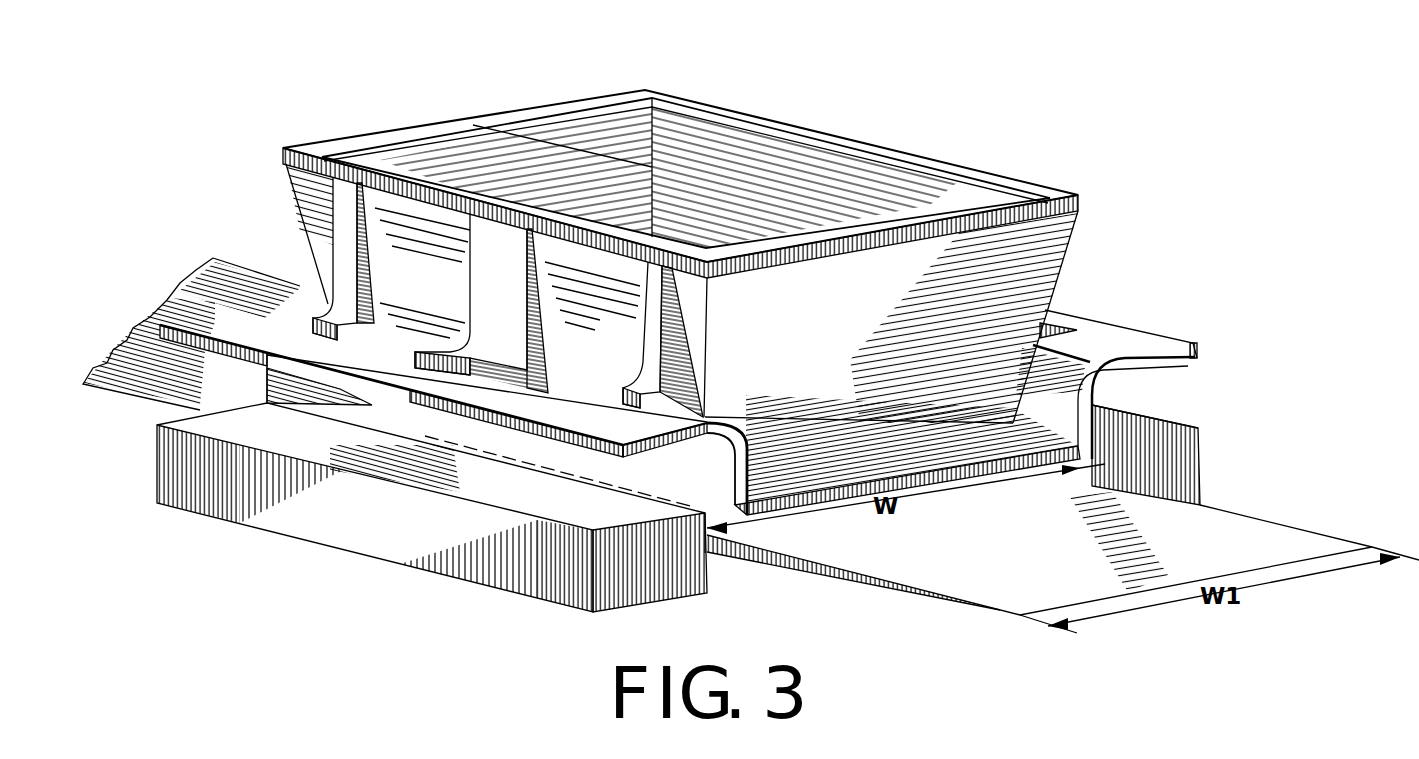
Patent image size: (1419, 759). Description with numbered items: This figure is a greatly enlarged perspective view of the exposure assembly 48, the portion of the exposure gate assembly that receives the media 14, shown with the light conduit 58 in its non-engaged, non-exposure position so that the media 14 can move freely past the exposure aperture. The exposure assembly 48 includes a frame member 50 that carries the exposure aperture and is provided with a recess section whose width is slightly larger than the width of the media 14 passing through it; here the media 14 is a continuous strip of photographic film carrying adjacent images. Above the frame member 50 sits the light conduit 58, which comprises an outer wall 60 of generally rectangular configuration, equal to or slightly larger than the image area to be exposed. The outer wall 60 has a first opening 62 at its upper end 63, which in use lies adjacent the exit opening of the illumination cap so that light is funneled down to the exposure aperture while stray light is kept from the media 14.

The media 14 is at (1046, 553).
The exposure assembly 48 is at (1182, 236).
The frame member 50 is at (1200, 458).
The light conduit 58 is at (721, 234).
The outer wall 60 is at (862, 331).
The first opening 62 is at (593, 133).
The upper end 63 is at (873, 168).